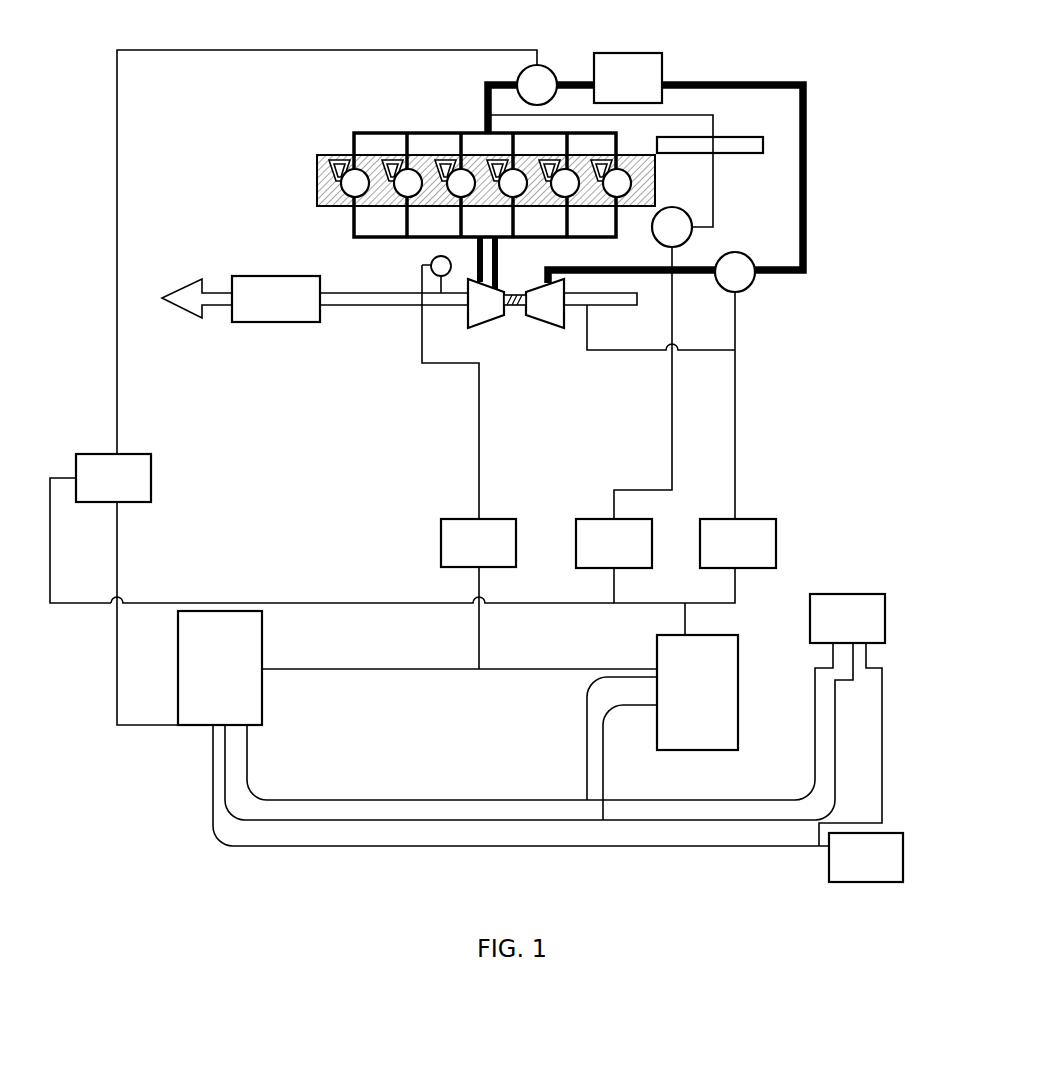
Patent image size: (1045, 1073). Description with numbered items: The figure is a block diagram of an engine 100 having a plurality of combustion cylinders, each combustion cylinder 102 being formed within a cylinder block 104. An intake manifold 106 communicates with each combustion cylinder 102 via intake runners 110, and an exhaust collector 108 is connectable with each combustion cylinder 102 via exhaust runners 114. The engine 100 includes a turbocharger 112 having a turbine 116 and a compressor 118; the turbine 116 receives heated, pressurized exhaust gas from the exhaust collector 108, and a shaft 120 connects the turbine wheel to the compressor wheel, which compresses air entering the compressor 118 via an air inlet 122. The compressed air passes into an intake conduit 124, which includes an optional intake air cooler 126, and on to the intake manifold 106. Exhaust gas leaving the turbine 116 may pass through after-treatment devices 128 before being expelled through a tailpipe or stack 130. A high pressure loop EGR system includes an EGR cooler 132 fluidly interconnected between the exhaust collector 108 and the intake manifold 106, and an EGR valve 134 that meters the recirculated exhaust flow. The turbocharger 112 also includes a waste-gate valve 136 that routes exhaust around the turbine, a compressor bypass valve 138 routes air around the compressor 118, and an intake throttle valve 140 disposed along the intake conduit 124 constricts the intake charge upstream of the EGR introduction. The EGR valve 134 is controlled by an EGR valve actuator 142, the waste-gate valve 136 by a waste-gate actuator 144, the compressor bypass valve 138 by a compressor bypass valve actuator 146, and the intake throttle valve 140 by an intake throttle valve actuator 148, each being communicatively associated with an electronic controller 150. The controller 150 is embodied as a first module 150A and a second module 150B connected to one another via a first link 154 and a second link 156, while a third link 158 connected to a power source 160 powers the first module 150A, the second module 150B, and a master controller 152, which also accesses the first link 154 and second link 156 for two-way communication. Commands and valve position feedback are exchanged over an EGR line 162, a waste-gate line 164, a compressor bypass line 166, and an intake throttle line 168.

The engine 100 is at (848, 112).
The combustion cylinder 102 is at (345, 200).
The cylinder block 104 is at (320, 177).
The intake manifold 106 is at (388, 134).
The exhaust collector 108 is at (410, 237).
The intake runners 110 is at (354, 148).
The turbocharger 112 is at (420, 377).
The exhaust runners 114 is at (320, 193).
The turbine 116 is at (470, 330).
The compressor 118 is at (556, 330).
The shaft 120 is at (518, 305).
The air inlet 122 is at (605, 307).
The intake conduit 124 is at (806, 180).
The intake air cooler 126 is at (628, 78).
The after-treatment devices 128 is at (350, 299).
The tailpipe or stack 130 is at (210, 307).
The EGR cooler 132 is at (738, 137).
The EGR valve 134 is at (693, 227).
The waste-gate valve 136 is at (430, 262).
The compressor bypass valve 138 is at (755, 278).
The intake throttle valve 140 is at (545, 68).
The EGR valve actuator 142 is at (614, 543).
The waste-gate actuator 144 is at (469, 467).
The compressor bypass valve actuator 146 is at (738, 543).
The intake throttle valve actuator 148 is at (100, 528).
The electronic controller 150 is at (536, 712).
The first module 150A is at (697, 692).
The second module 150B is at (417, 668).
The master controller 152 is at (847, 618).
The first link 154 is at (430, 800).
The second link 156 is at (335, 818).
The third link 158 is at (670, 846).
The power source 160 is at (866, 857).
The EGR line 162 is at (616, 585).
The waste-gate line 164 is at (476, 585).
The compressor bypass line 166 is at (707, 603).
The intake throttle line 168 is at (119, 193).